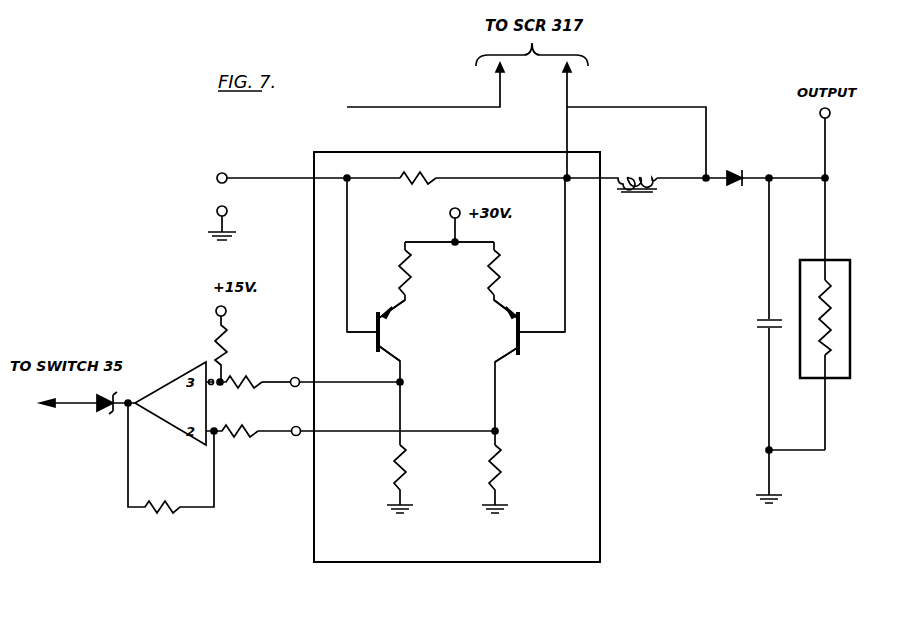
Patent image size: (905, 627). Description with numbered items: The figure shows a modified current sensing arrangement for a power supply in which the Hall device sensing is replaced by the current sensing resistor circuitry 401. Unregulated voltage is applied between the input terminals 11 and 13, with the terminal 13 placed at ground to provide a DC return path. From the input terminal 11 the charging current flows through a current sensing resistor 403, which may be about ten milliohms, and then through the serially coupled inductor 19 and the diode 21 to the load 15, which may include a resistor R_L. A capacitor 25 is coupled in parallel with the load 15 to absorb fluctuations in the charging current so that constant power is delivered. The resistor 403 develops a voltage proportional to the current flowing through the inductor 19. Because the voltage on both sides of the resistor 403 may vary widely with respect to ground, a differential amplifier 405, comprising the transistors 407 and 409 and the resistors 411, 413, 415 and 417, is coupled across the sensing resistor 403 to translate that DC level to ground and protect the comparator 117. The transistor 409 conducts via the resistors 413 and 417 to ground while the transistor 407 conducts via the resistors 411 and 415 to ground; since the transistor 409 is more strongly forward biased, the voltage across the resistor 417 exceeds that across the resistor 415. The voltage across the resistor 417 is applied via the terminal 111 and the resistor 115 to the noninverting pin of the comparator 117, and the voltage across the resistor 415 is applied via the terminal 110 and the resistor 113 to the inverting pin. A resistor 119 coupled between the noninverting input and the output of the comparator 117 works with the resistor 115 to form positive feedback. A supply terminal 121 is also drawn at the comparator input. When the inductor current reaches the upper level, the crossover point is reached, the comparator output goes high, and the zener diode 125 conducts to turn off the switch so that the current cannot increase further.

The input terminal 11 is at (226, 174).
The input terminal 13 is at (228, 210).
The load 15 is at (842, 380).
The inductor 19 is at (641, 172).
The diode 21 is at (733, 190).
The capacitor 25 is at (761, 330).
The terminal 110 is at (295, 376).
The terminal 111 is at (296, 438).
The resistor 113 is at (244, 376).
The resistor 115 is at (244, 441).
The comparator 117 is at (178, 427).
The resistor 119 is at (152, 514).
The supply terminal with resistor 121 is at (227, 323).
The zener diode 125 is at (108, 415).
The current sensing resistor circuitry 401 is at (500, 558).
The current sensing resistor 403 is at (416, 170).
The differential amplifier 405 is at (545, 232).
The transistor 407 is at (375, 345).
The transistor 409 is at (548, 306).
The resistor 411 is at (400, 262).
The resistor 413 is at (503, 273).
The resistor 415 is at (396, 456).
The resistor 417 is at (500, 468).